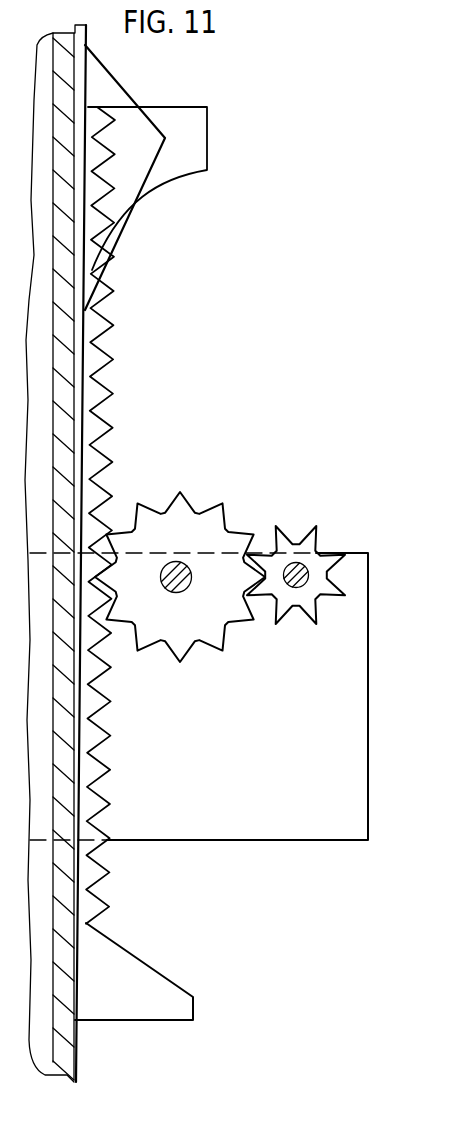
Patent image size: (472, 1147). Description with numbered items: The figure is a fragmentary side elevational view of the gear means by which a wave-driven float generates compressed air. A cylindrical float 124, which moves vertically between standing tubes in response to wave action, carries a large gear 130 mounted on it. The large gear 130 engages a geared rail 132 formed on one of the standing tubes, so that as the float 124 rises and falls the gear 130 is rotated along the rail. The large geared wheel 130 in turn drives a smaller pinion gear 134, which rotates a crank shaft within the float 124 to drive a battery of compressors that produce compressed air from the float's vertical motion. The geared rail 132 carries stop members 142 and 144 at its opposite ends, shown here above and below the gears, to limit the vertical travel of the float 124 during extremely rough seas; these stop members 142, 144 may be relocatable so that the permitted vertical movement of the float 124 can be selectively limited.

The float 124 is at (358, 748).
The large gear 130 is at (176, 503).
The geared rail 132 is at (113, 352).
The pinion gear 134 is at (283, 542).
The stop member 142 is at (160, 983).
The stop member 144 is at (197, 145).